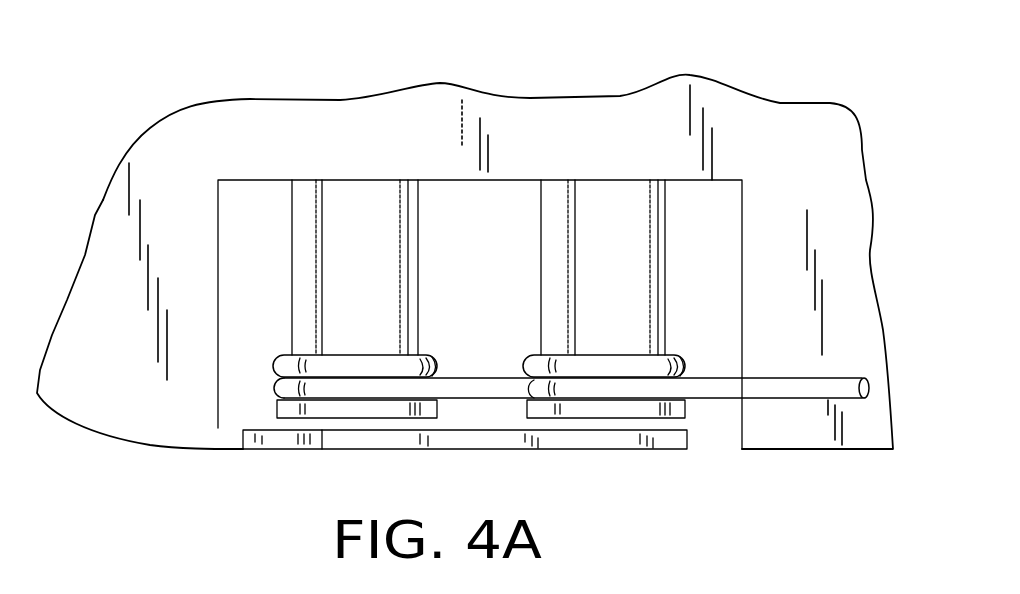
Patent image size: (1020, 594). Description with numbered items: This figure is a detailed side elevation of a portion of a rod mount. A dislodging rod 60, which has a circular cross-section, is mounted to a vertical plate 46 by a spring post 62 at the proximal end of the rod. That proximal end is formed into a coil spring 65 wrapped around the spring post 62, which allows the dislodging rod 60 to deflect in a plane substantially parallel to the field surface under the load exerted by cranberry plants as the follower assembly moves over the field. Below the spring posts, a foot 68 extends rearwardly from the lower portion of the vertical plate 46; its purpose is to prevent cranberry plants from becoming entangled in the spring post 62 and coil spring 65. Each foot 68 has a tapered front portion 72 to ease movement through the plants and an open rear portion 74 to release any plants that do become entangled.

The vertical plate 46 is at (622, 127).
The spring post 62 is at (600, 233).
The dislodging rod 60 is at (437, 392).
The coil spring 65 is at (290, 385).
The tapered front portion 72 is at (270, 440).
The foot 68 is at (598, 440).
The open rear portion 74 is at (673, 440).